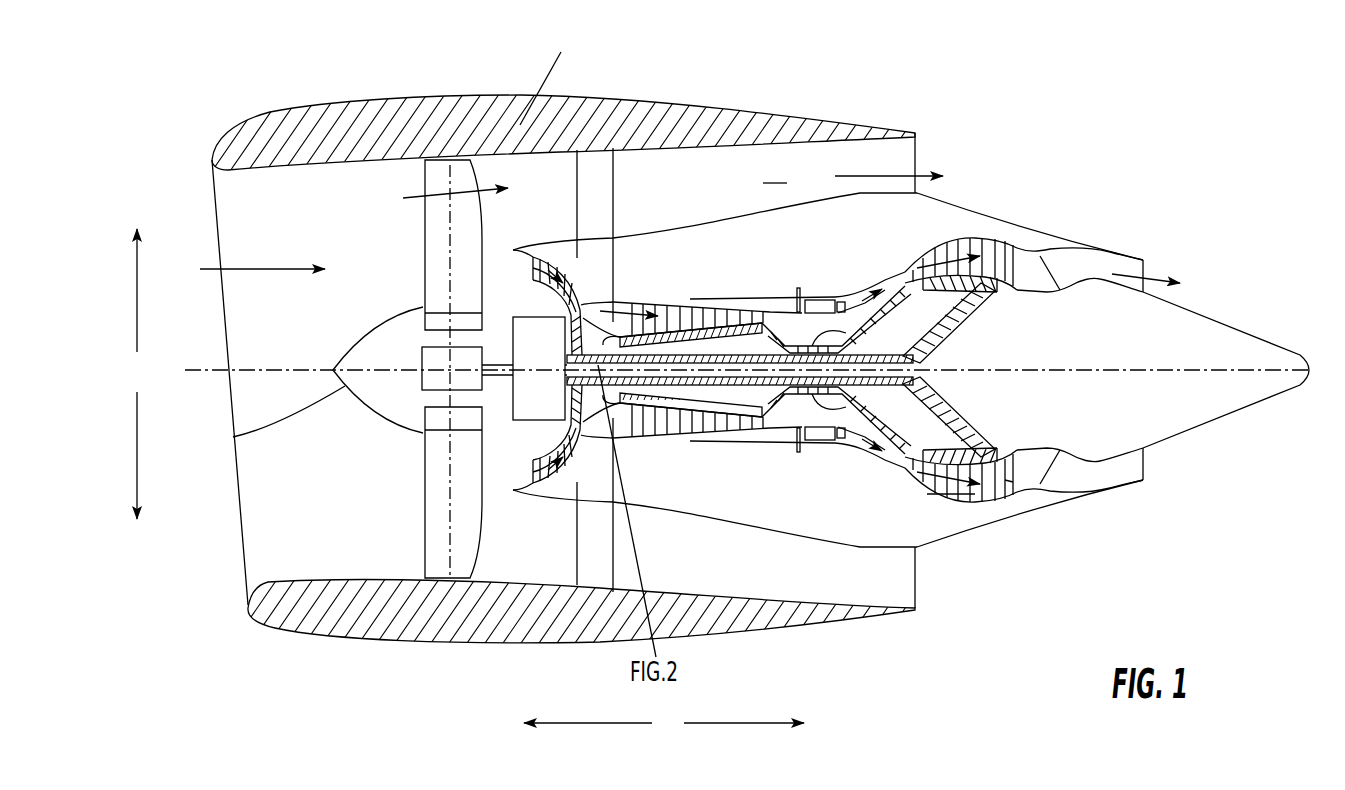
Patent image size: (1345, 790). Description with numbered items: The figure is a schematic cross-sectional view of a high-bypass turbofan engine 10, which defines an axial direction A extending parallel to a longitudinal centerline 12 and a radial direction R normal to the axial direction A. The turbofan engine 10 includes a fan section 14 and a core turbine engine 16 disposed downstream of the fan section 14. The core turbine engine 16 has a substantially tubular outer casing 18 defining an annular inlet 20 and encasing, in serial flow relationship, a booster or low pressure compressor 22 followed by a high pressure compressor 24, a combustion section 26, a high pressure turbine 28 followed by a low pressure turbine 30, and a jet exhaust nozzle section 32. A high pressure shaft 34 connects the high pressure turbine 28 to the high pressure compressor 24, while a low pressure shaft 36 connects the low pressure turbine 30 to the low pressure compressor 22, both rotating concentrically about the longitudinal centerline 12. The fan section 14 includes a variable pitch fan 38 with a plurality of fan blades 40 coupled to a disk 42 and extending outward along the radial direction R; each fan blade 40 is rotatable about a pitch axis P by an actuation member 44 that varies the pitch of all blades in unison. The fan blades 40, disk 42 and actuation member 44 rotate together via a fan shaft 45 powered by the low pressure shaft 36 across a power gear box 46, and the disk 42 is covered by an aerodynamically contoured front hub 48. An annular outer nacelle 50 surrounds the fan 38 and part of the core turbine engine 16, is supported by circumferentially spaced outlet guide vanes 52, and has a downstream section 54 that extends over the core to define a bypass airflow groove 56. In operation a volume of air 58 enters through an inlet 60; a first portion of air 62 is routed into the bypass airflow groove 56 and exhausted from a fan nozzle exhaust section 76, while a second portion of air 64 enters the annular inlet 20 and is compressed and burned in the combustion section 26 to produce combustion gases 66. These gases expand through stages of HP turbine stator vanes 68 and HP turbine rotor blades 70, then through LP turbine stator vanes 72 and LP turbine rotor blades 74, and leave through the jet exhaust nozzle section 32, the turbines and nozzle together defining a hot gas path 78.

The turbofan engine 10 is at (1060, 113).
The longitudinal centerline 12 is at (1077, 370).
The fan section 14 is at (383, 180).
The core turbine engine 16 is at (735, 253).
The outer casing 18 is at (773, 534).
The annular inlet 20 is at (513, 488).
The low pressure compressor 22 is at (577, 427).
The high pressure compressor 24 is at (645, 428).
The combustion section 26 is at (815, 439).
The high pressure turbine 28 is at (960, 422).
The low pressure turbine 30 is at (1002, 502).
The jet exhaust nozzle section 32 is at (1064, 482).
The high pressure shaft 34 is at (855, 332).
The low pressure shaft 36 is at (955, 331).
The variable pitch fan 38 is at (391, 421).
The fan blades 40 is at (423, 520).
The disk 42 is at (443, 322).
The actuation member 44 is at (422, 349).
The fan shaft 45 is at (493, 353).
The power gear box 46 is at (550, 333).
The front hub 48 is at (233, 437).
The outer nacelle 50 is at (470, 643).
The outlet guide vanes 52 is at (613, 177).
The downstream section of the nacelle 54 is at (860, 120).
The bypass airflow groove 56 is at (775, 172).
The volume of air 58 is at (267, 267).
The inlet 60 is at (243, 582).
The first portion of air 62 is at (471, 163).
The second portion of air 64 is at (515, 252).
The combustion gases 66 is at (960, 243).
The HP turbine stator vanes 68 is at (833, 440).
The HP turbine rotor blades 70 is at (933, 398).
The LP turbine stator vanes 72 is at (923, 480).
The LP turbine rotor blades 74 is at (937, 494).
The fan nozzle exhaust section 76 is at (905, 157).
The hot gas path 78 is at (900, 268).
The pitch axis P is at (549, 75).
The radial direction R is at (138, 374).
The axial direction A is at (664, 724).